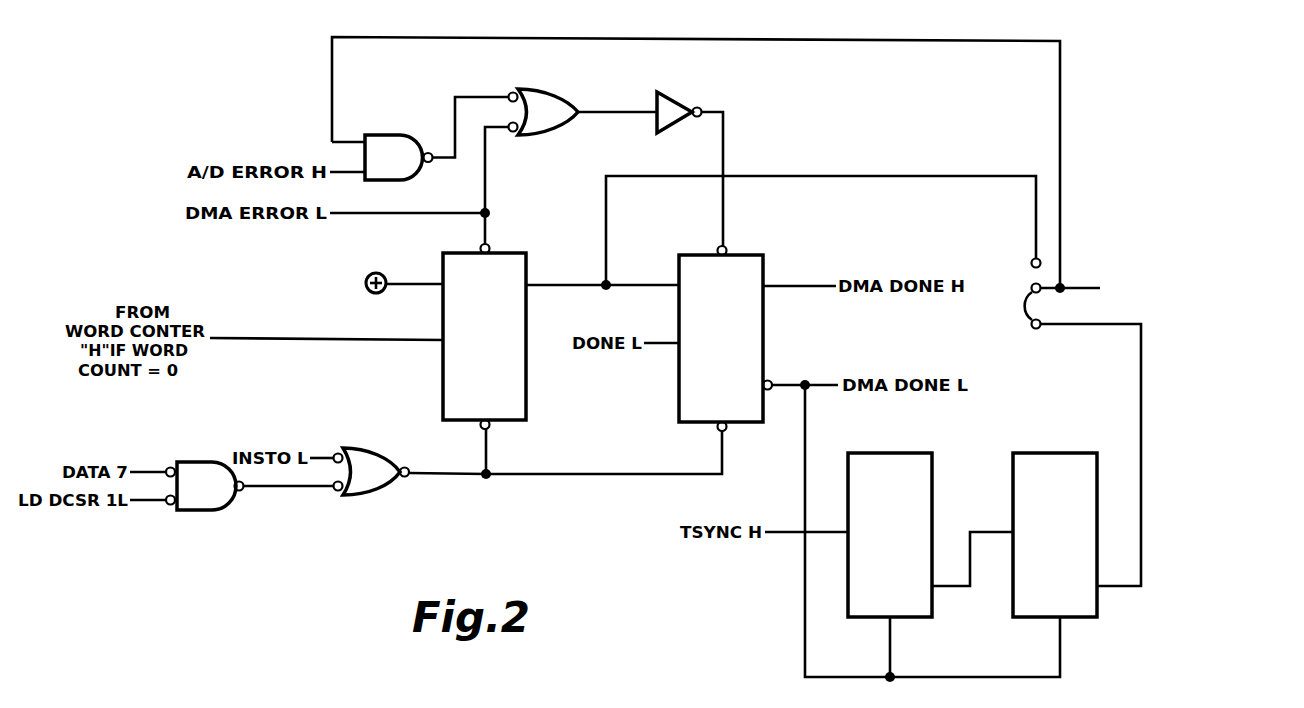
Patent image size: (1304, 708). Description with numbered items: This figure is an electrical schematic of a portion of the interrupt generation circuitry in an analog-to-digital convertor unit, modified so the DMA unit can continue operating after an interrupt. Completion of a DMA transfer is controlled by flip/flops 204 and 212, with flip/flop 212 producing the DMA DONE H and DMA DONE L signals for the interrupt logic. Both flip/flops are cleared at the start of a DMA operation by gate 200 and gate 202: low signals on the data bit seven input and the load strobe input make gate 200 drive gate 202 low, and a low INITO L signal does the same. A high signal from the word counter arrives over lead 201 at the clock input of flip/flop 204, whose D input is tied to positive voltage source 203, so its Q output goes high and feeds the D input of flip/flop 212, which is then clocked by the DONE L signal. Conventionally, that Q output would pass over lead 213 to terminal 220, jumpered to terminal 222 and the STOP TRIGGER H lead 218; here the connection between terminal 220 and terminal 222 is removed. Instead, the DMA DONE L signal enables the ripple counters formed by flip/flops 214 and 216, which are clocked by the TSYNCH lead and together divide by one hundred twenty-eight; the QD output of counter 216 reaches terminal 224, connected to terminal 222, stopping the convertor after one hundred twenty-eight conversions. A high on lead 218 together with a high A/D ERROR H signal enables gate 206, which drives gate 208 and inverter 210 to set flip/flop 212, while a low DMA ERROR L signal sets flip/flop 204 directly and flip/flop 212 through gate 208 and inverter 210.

The gate 200 is at (232, 503).
The lead 201 is at (332, 339).
The gate 202 is at (388, 495).
The positive voltage source 203 is at (384, 274).
The flip/flop 204 is at (527, 258).
The gate 206 is at (403, 134).
The gate 208 is at (555, 90).
The inverter 210 is at (684, 105).
The flip/flop 212 is at (758, 257).
The lead 213 is at (853, 176).
The flip/flop (counter) 214 is at (921, 453).
The flip/flop (counter) 216 is at (1059, 453).
The STOP TRIGGER H lead 218 is at (1081, 288).
The terminal 220 is at (1031, 257).
The terminal 222 is at (1030, 284).
The terminal 224 is at (1034, 329).